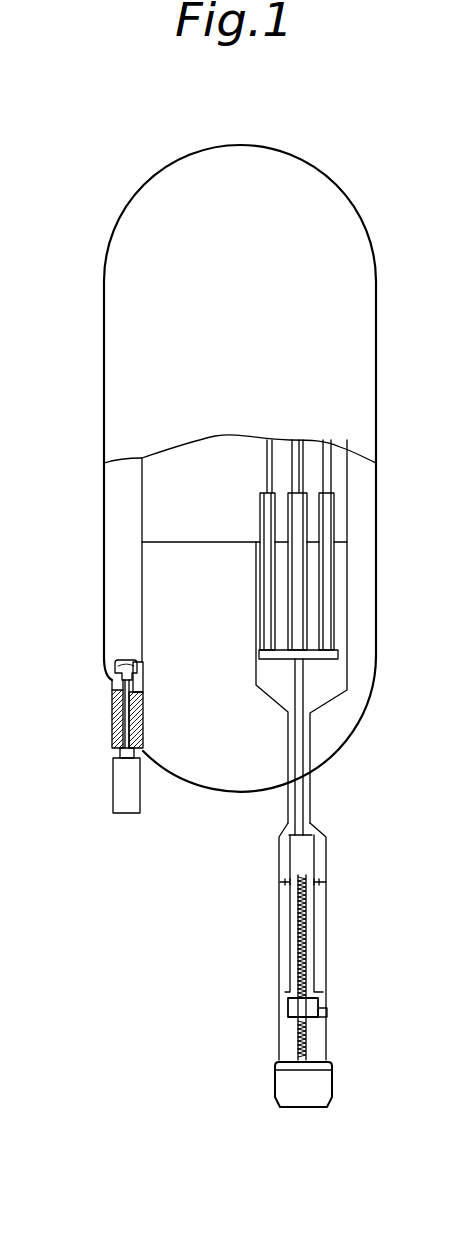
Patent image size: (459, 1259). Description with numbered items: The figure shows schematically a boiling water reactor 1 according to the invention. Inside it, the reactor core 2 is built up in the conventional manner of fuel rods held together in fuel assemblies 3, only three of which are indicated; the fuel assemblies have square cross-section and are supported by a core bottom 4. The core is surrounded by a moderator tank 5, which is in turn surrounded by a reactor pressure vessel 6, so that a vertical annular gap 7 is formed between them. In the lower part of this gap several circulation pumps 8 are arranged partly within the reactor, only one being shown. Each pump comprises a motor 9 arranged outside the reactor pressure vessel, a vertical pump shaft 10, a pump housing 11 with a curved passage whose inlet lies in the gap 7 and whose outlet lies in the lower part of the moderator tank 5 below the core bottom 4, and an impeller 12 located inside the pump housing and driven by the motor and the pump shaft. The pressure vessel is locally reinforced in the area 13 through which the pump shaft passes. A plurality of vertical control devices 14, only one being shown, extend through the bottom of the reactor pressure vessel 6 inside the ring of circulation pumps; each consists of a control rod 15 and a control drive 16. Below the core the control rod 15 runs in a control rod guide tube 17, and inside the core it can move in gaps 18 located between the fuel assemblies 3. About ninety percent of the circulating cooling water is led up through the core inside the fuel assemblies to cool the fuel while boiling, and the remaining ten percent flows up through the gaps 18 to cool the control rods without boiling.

The reactor 1 is at (221, 468).
The reactor core 2 is at (208, 455).
The fuel assemblies 3 is at (279, 456).
The core bottom 4 is at (187, 541).
The moderator tank 5 is at (142, 566).
The reactor pressure vessel 6 is at (104, 566).
The vertical annular gap 7 is at (124, 480).
The circulation pumps 8 is at (118, 753).
The motor 9 is at (125, 786).
The vertical pump shaft 10 is at (125, 718).
The pump housing 11 is at (134, 676).
The impeller 12 is at (118, 658).
The locally reinforced area 13 is at (111, 690).
The vertical control devices 14 is at (288, 807).
The control rod 15 is at (293, 660).
The control drive 16 is at (279, 919).
The control rod guide tube 17 is at (256, 684).
The gaps 18 is at (294, 449).